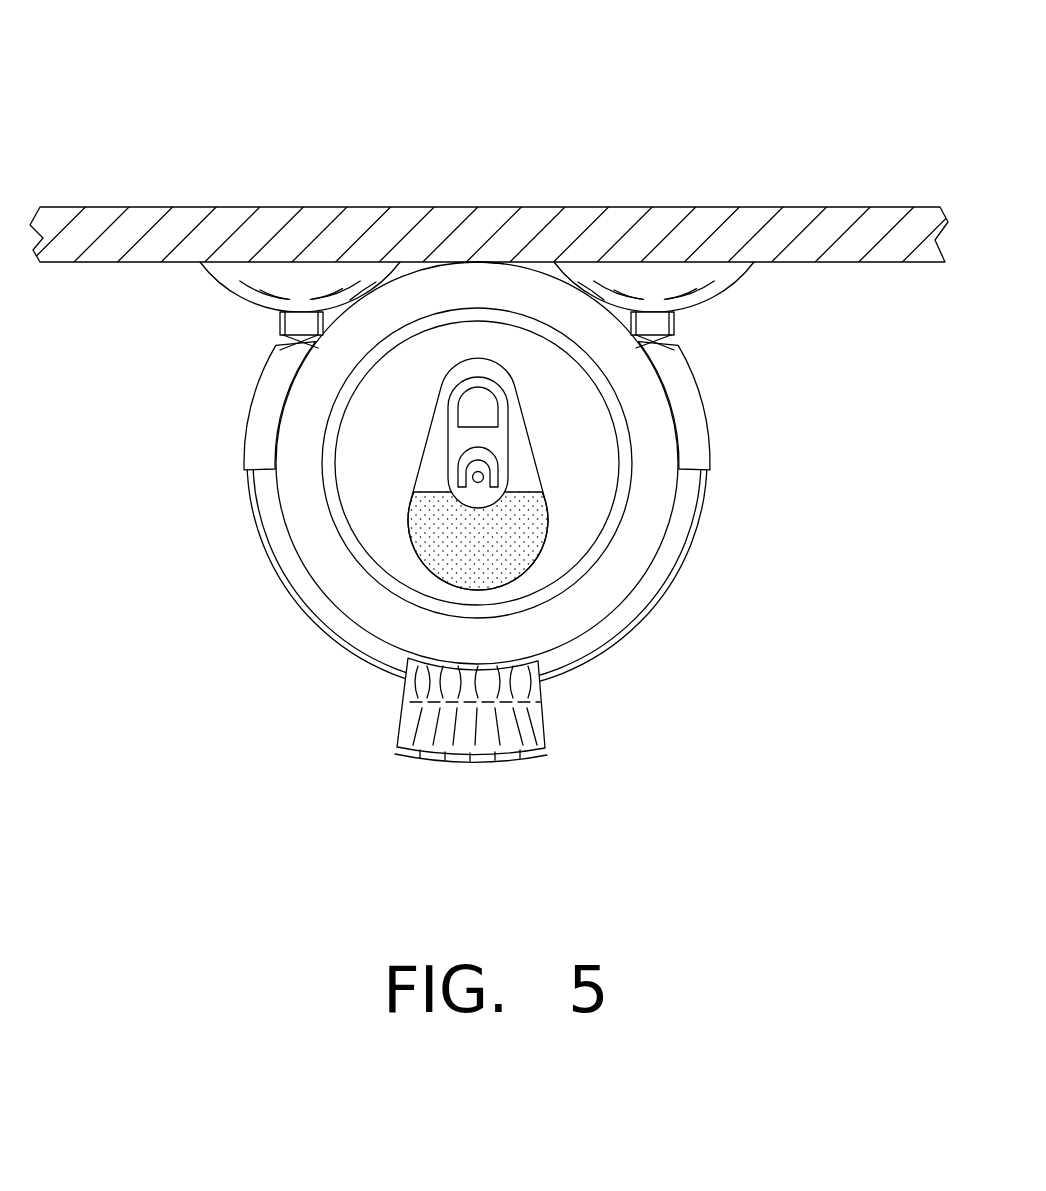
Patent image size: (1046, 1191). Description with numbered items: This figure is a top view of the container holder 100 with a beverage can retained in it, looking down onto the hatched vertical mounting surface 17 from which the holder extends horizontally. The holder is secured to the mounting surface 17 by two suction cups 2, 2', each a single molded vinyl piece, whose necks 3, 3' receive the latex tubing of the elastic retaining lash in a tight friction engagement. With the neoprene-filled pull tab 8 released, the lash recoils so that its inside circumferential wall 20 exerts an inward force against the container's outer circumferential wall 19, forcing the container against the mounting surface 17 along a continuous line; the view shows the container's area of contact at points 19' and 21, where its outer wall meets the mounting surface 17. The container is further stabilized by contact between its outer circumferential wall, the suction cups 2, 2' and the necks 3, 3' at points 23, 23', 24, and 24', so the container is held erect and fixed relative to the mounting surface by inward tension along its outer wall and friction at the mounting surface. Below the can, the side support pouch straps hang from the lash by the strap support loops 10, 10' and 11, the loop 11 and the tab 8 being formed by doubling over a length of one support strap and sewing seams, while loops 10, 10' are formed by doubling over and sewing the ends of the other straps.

The suction cup 2 is at (256, 292).
The suction cup 2' is at (730, 225).
The suction cup neck 3 is at (230, 331).
The suction cup neck 3' is at (735, 357).
The tab 8 is at (463, 763).
The support loop 10 is at (233, 441).
The support loop 10' is at (726, 437).
The support loop 11 is at (487, 682).
The mounting surface 17 is at (495, 225).
The outer circumferential wall 19 is at (492, 497).
The outer circumferential wall contact point 19' is at (417, 136).
The inside circumferential wall 20 is at (357, 633).
The contact point 21 is at (503, 262).
The contact point 23 is at (231, 375).
The contact point 23' is at (720, 311).
The contact point 24 is at (306, 179).
The contact point 24' is at (693, 189).
The container holder 100 is at (493, 457).